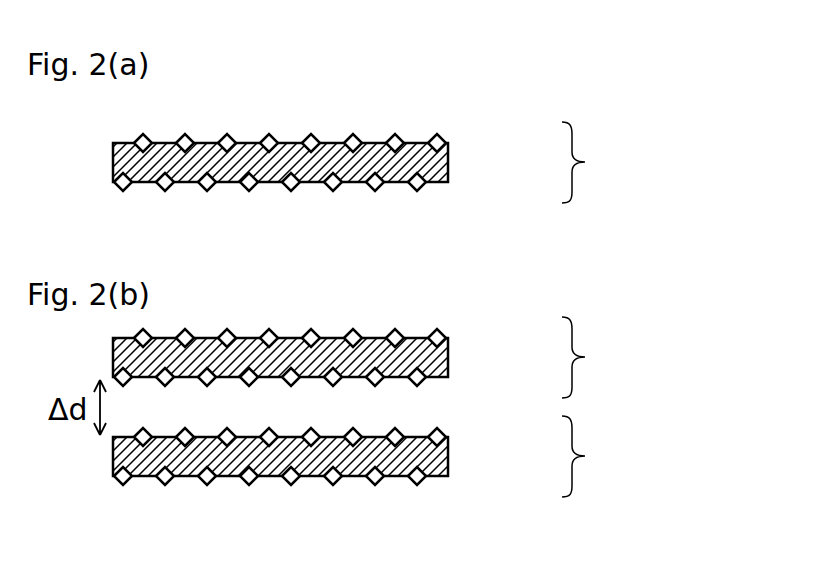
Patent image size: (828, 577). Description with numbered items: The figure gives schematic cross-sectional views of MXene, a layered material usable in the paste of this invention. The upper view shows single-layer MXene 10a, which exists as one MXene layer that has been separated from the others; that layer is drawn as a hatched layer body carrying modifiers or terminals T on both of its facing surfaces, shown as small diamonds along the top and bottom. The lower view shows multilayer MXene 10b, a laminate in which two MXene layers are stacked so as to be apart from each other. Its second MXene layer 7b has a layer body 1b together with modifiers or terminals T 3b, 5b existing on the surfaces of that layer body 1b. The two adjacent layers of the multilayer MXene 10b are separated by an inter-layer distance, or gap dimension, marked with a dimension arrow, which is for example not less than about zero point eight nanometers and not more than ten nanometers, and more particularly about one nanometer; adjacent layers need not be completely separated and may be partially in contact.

The single-layer MXene 10a is at (606, 208).
The layer body 1b is at (331, 456).
The modifier or terminal T 3b is at (342, 427).
The modifier or terminal T 5b is at (332, 486).
The MXene layer 7b is at (596, 456).
The multilayer MXene 10b is at (648, 524).